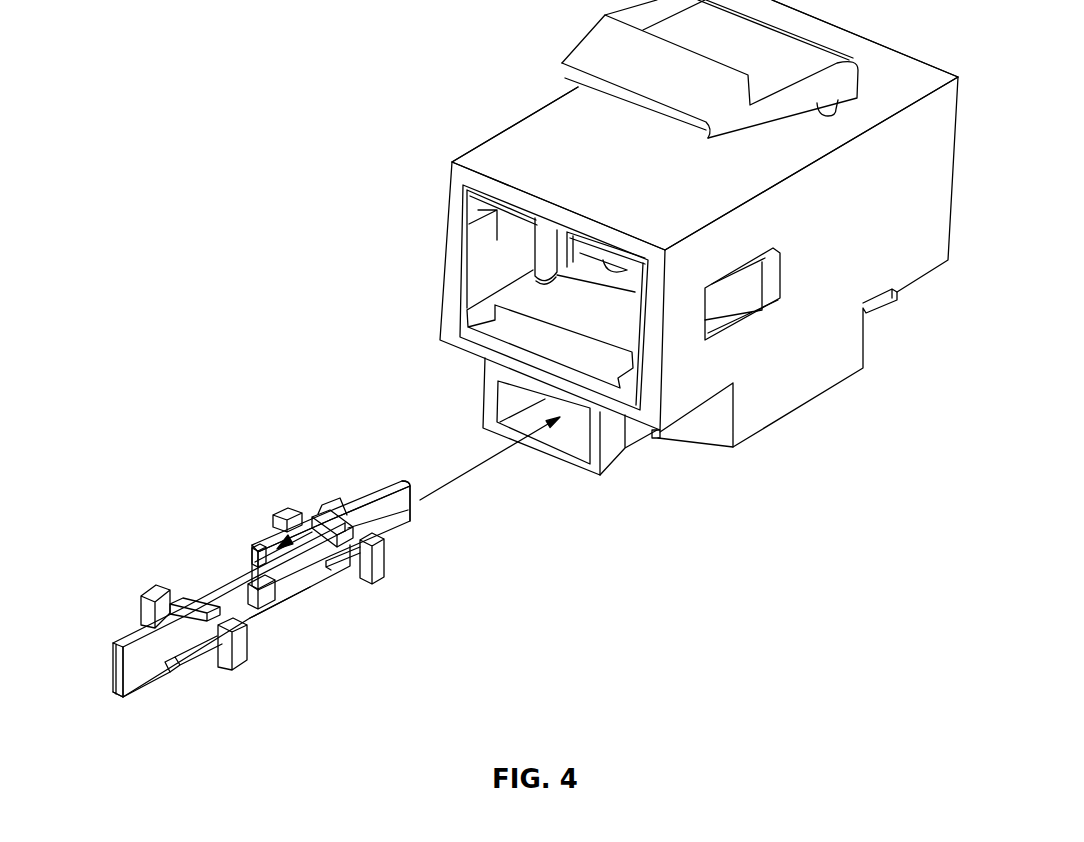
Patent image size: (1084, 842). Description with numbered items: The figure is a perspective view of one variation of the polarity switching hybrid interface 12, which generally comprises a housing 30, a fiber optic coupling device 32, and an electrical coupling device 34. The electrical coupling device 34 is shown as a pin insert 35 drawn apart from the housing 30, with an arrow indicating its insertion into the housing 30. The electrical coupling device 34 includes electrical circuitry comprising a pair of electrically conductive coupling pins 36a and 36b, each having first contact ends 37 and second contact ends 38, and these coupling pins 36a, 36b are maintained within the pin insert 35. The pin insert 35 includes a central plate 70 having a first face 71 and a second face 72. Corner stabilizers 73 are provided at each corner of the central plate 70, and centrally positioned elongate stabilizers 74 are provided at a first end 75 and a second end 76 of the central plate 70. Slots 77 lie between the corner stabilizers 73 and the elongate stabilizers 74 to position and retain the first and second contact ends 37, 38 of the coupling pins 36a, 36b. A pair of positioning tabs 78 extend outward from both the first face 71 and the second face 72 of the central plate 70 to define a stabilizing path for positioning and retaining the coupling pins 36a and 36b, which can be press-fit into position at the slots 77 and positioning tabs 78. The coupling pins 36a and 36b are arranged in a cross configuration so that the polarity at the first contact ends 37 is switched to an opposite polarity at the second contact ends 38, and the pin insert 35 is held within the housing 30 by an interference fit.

The polarity switching hybrid interface 12 is at (484, 120).
The housing 30 is at (628, 174).
The fiber optic coupling device 32 is at (478, 248).
The electrical coupling device 34 is at (290, 538).
The pin insert 35 is at (142, 518).
The coupling pin 36a is at (268, 542).
The coupling pin 36b is at (140, 610).
The first contact ends 37 is at (125, 628).
The second contact ends 38 is at (347, 505).
The central plate 70 is at (365, 580).
The first face 71 is at (270, 608).
The second face 72 is at (320, 600).
The corner stabilizers 73 is at (240, 660).
The elongate stabilizers 74 is at (145, 678).
The first end 75 is at (113, 694).
The second end 76 is at (400, 483).
The slots 77 is at (170, 668).
The positioning tabs 78 is at (258, 548).